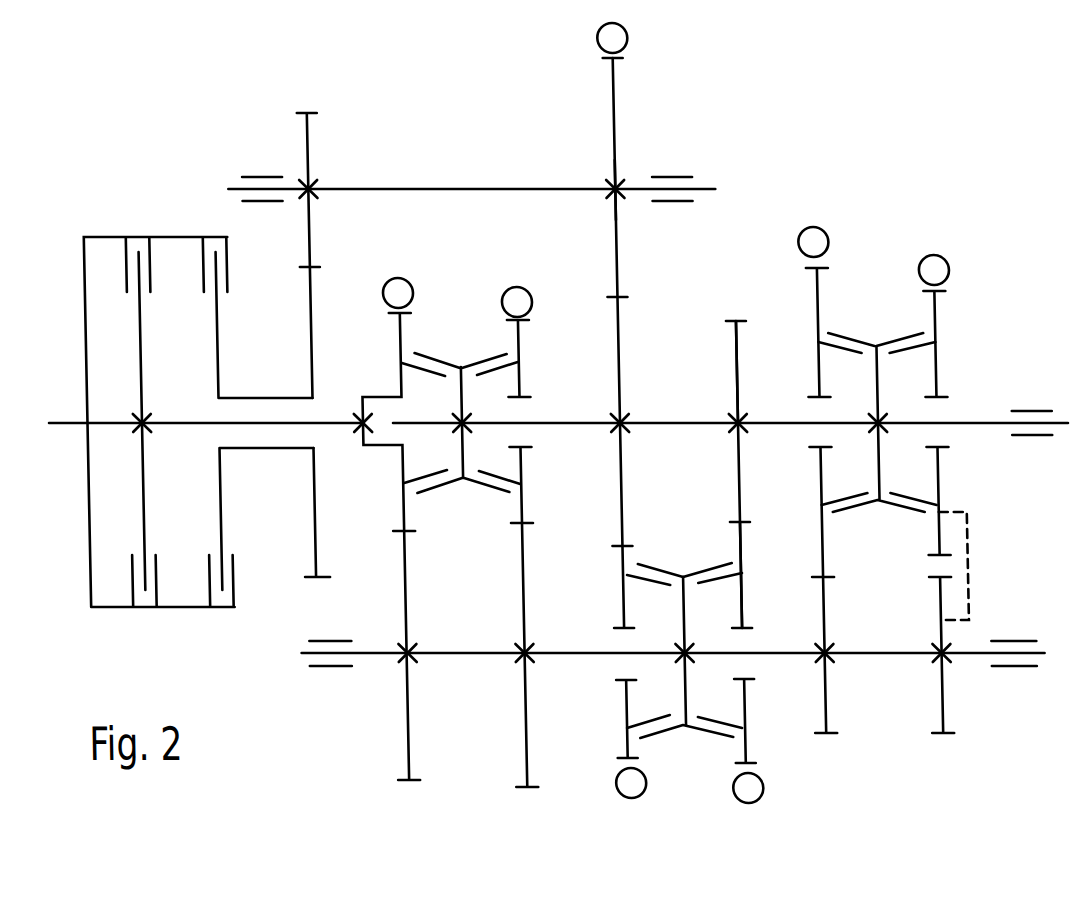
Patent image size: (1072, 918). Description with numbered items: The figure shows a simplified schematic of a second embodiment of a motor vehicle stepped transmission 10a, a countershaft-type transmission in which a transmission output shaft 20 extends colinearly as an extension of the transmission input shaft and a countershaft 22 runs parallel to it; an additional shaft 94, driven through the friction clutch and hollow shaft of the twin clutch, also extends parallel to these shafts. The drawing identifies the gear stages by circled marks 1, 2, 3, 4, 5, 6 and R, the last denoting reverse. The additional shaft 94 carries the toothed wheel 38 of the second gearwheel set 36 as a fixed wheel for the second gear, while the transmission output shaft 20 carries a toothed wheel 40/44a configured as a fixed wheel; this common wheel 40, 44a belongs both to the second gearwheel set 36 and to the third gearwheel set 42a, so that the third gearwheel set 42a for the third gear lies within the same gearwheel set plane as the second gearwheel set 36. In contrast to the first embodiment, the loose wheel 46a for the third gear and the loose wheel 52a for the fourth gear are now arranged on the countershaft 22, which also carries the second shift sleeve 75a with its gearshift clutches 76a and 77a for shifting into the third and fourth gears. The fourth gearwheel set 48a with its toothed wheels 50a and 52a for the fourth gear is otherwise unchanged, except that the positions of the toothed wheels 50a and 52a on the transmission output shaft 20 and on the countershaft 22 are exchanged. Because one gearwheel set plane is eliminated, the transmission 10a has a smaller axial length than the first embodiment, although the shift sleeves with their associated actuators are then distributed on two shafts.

The motor vehicle stepped transmission 10a is at (854, 142).
The transmission output shaft 20 is at (987, 422).
The countershaft 22 is at (958, 655).
The second gearwheel set 36 is at (604, 140).
The toothed wheel 38 is at (621, 113).
The toothed wheel 40 is at (621, 477).
The toothed wheel 44a is at (660, 421).
The third gearwheel set 42a is at (663, 758).
The loose wheel 46a is at (622, 605).
The fourth gearwheel set 48a is at (737, 313).
The toothed wheel 50a is at (741, 365).
The loose wheel 52a is at (739, 552).
The second shift sleeve 75a is at (701, 616).
The gearshift clutch 76a is at (657, 575).
The gearshift clutch 77a is at (712, 570).
The additional shaft 94 is at (488, 188).
The first gear stage 1 is at (818, 480).
The second gear stage 2 is at (612, 40).
The third gear stage 3 is at (630, 739).
The fourth gear stage 4 is at (747, 741).
The fifth gear stage 5 is at (391, 529).
The sixth gear stage 6 is at (522, 537).
The reverse gear stage R is at (945, 494).